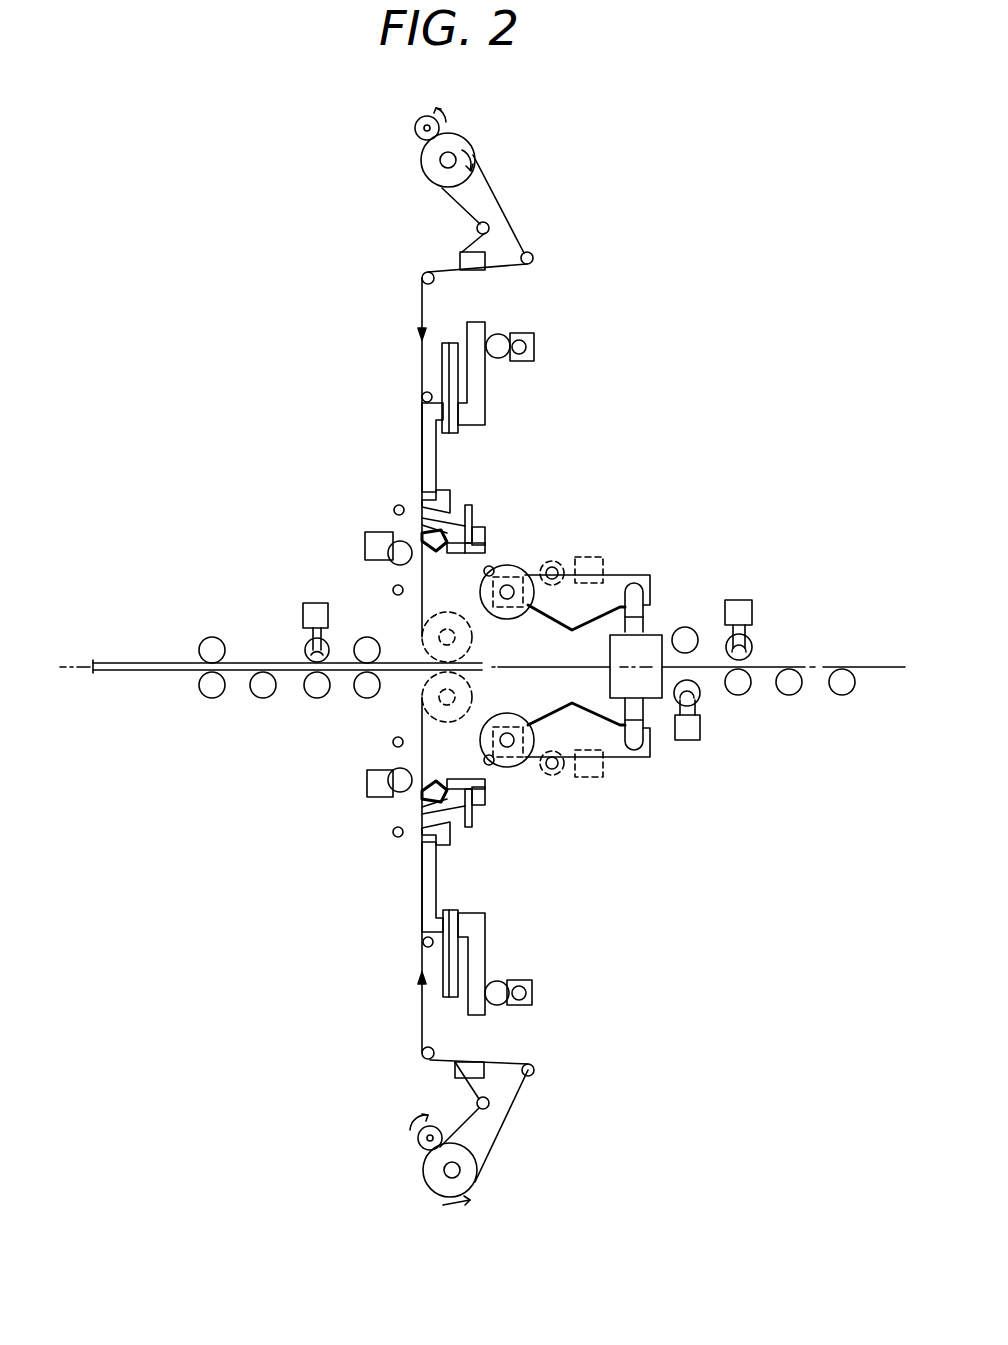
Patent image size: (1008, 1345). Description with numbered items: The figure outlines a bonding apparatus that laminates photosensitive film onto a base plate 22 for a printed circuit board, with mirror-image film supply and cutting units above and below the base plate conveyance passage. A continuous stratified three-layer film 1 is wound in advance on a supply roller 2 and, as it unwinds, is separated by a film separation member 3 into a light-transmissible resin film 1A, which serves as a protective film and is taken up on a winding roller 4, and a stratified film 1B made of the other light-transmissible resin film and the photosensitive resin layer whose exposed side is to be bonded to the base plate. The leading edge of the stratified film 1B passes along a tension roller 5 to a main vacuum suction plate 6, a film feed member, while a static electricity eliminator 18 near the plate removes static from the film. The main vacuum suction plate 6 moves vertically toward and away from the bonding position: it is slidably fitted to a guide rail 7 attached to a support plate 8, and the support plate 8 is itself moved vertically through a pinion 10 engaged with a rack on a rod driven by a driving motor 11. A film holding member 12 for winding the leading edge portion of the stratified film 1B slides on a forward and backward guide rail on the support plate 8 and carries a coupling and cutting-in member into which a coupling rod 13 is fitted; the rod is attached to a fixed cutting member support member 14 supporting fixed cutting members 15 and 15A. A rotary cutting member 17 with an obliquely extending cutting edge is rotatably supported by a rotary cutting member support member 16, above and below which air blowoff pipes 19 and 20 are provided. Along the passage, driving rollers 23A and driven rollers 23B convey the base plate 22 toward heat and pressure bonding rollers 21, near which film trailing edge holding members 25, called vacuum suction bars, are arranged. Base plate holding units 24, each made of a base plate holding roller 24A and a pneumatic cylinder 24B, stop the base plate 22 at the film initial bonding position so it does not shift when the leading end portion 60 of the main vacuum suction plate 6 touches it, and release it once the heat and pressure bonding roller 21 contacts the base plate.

The continuous stratified three-layer film 1 is at (478, 152).
The light-transmissible resin film 1A is at (416, 130).
The stratified film 1B is at (418, 310).
The supply roller 2 is at (452, 155).
The film separation member 3 is at (455, 262).
The winding roller 4 is at (422, 118).
The tension roller 5 is at (420, 1052).
The main vacuum suction plate 6 is at (428, 440).
The guide rail 7 is at (448, 432).
The support plate 8 is at (478, 322).
The pinion 10 is at (494, 354).
The driving motor 11 is at (536, 350).
The film holding member 12 is at (423, 943).
The coupling rod 13 is at (474, 510).
The fixed cutting member support member 14 is at (467, 553).
The fixed cutting member 15 is at (420, 536).
The fixed cutting member 15A is at (428, 900).
The rotary cutting member support member 16 is at (365, 544).
The rotary cutting member 17 is at (398, 555).
The static electricity eliminator 18 is at (422, 395).
The air blowoff pipe 19 is at (393, 590).
The air blowoff pipe 20 is at (397, 505).
The heat and pressure bonding roller 21 is at (522, 570).
The base plate 22 is at (118, 672).
The driving rollers 23A is at (212, 690).
The driven rollers 23B is at (205, 648).
The base plate holding unit 24 is at (192, 545).
The base plate holding roller 24A is at (305, 648).
The pneumatic cylinder 24B is at (303, 610).
The film trailing edge holding member 25 is at (492, 566).
The leading end portion 60 is at (445, 498).